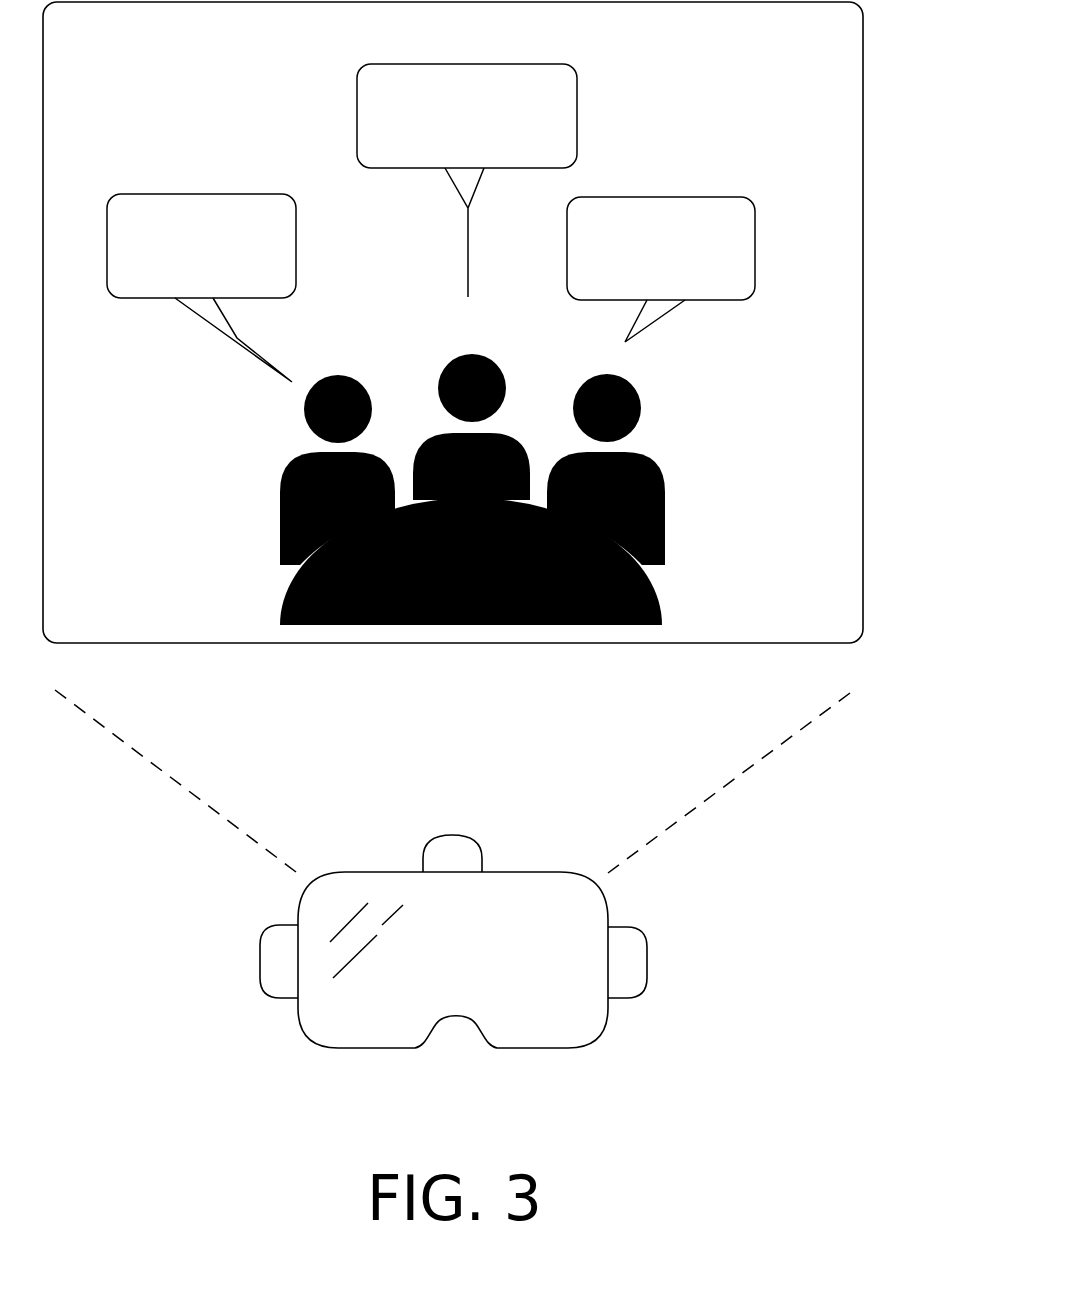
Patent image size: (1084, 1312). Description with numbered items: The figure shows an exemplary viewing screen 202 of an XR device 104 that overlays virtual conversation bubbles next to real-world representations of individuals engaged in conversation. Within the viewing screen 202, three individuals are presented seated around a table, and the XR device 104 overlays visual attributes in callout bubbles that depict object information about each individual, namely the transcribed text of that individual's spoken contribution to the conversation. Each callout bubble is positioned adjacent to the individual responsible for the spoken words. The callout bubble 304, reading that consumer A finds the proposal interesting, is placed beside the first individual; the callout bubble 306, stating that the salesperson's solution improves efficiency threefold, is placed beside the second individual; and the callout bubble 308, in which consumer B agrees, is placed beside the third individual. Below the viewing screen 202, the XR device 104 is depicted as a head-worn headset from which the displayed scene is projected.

The XR device 104 is at (648, 960).
The viewing screen 202 is at (863, 117).
The callout bubble 304 is at (195, 195).
The callout bubble 306 is at (575, 90).
The callout bubble 308 is at (683, 196).